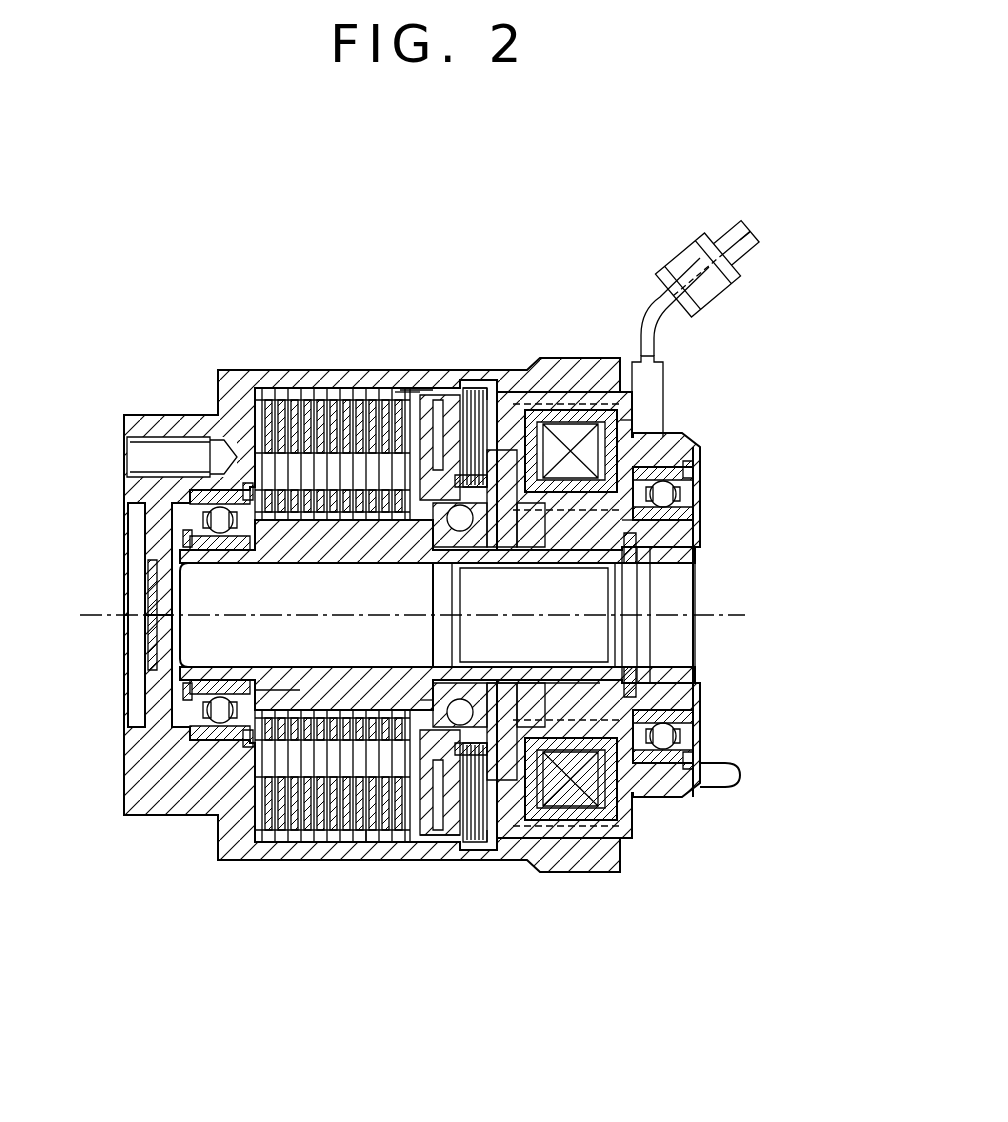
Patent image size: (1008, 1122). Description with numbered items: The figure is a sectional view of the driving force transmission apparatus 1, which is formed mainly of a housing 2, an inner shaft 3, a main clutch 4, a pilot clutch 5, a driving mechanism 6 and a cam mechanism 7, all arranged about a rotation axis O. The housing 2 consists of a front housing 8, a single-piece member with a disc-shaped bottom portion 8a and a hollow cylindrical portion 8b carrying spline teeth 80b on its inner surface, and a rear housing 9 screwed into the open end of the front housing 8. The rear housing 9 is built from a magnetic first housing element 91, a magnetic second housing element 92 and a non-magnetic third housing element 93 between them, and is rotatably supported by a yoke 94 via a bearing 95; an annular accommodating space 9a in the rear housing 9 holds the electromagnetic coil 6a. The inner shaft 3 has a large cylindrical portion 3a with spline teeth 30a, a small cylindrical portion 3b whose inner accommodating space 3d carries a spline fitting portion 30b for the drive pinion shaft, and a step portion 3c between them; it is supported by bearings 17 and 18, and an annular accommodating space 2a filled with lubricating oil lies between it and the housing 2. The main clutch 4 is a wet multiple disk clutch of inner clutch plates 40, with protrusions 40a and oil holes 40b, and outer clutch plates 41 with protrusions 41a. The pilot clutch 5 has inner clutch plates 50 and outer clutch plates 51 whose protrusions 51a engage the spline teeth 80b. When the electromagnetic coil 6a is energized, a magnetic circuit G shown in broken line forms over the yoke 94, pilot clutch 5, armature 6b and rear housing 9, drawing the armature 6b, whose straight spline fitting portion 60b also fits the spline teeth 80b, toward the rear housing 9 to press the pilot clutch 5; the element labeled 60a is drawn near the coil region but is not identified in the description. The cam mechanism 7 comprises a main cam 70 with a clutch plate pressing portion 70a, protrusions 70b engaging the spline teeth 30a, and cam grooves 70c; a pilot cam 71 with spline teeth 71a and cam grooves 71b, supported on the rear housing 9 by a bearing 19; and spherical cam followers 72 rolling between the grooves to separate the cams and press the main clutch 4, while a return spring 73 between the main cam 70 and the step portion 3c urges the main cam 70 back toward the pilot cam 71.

The driving force transmission apparatus 1 is at (749, 305).
The housing 2 is at (722, 330).
The accommodating space 2a is at (392, 540).
The inner shaft 3 is at (642, 680).
The large cylindrical portion 3a is at (262, 682).
The small cylindrical portion 3b is at (636, 548).
The step portion 3c is at (446, 576).
The accommodating space 3d is at (640, 604).
The main clutch 4 is at (277, 848).
The pilot clutch 5 is at (486, 384).
The driving mechanism 6 is at (555, 1005).
The electromagnetic coil 6a is at (575, 803).
The armature 6b is at (456, 843).
The cam mechanism 7 is at (416, 386).
The front housing 8 is at (652, 354).
The bottom portion 8a is at (163, 427).
The cylindrical portion 8b is at (319, 378).
The rear housing 9 is at (632, 398).
The accommodating space 9a is at (632, 420).
The bearing 17 is at (172, 532).
The bearing 18 is at (638, 569).
The bearing 19 is at (525, 700).
The spline teeth 30a is at (290, 694).
The spline fitting portion 30b is at (625, 652).
The inner clutch plates 40 is at (293, 540).
The protrusions 40a is at (300, 503).
The oil holes 40b is at (246, 542).
The outer clutch plates 41 is at (362, 853).
The protrusions 41a is at (383, 850).
The inner clutch plates 50 is at (478, 843).
The outer clutch plates 51 is at (514, 843).
The protrusions 51a is at (468, 388).
The yoke 60a is at (552, 706).
The straight spline fitting portion 60b is at (449, 847).
The main cam 70 is at (436, 386).
The clutch plate pressing portion 70a is at (413, 392).
The protrusions 70b is at (353, 713).
The cam grooves 70c is at (462, 548).
The pilot cam 71 is at (522, 563).
The spline teeth 71a is at (478, 700).
The cam grooves 71b is at (540, 566).
The cam followers 72 is at (463, 532).
The return spring 73 is at (412, 706).
The spline teeth 80b is at (252, 390).
The first housing element 91 is at (692, 530).
The second housing element 92 is at (546, 392).
The third housing element 93 is at (500, 392).
The yoke 94 is at (697, 452).
The bearing 95 is at (690, 488).
The magnetic circuit G is at (618, 357).
The rotation axis O is at (748, 615).